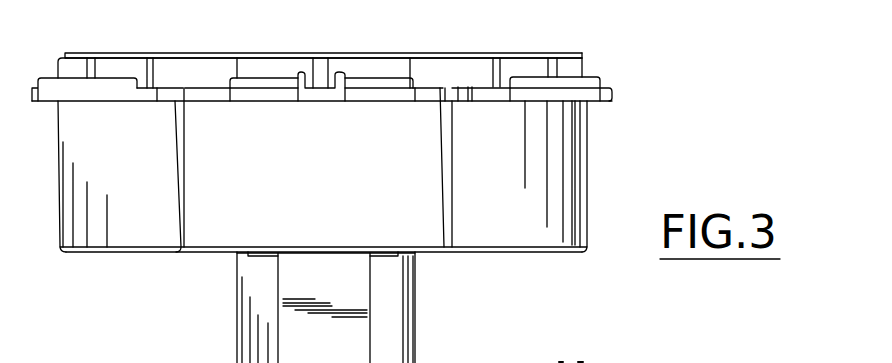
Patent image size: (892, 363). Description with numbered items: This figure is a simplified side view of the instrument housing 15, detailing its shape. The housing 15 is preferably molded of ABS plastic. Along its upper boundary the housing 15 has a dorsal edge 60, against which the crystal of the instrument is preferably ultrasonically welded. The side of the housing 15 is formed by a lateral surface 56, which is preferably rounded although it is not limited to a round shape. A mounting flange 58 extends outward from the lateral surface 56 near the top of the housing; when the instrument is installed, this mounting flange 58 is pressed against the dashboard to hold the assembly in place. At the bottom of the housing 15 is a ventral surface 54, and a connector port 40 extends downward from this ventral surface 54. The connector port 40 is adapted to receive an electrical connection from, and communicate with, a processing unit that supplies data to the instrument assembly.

The housing 15 is at (522, 52).
The dorsal edge 60 is at (578, 55).
The mounting flange 58 is at (612, 93).
The lateral surface 56 is at (588, 172).
The ventral surface 54 is at (497, 252).
The connector port 40 is at (400, 302).